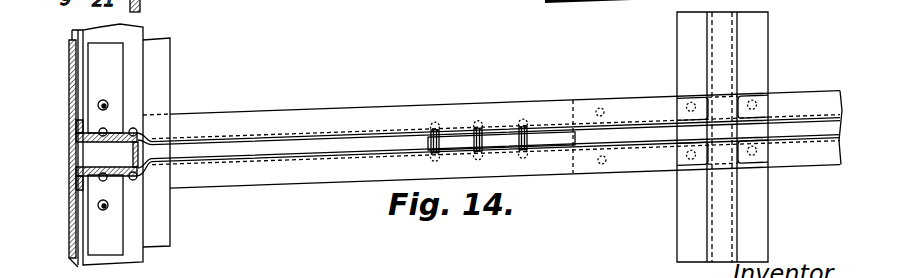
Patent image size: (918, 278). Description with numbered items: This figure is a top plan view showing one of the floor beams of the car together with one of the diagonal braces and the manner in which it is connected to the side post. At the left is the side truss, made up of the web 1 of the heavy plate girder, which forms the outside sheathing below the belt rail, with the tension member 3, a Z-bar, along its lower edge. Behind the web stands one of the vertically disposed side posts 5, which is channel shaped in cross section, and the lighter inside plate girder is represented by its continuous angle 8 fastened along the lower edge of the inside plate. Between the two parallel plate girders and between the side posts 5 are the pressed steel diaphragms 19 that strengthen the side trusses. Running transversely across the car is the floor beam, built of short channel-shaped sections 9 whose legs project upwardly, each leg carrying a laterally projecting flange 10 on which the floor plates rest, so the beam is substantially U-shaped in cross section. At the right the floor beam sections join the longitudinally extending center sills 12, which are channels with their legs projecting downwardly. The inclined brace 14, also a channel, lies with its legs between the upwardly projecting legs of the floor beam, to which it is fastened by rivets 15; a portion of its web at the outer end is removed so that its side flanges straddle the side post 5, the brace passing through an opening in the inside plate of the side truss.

The web of the plate girder 1 is at (70, 152).
The tension member 3 is at (135, 37).
The side posts 5 is at (138, 172).
The continuous angle 8 is at (157, 88).
The channel-shaped sections 9 is at (338, 170).
The laterally projecting flange 10 is at (288, 128).
The center sills 12 is at (725, 197).
The inclined braces 14 is at (242, 169).
The rivets 15 is at (435, 138).
The pressed steel diaphragms 19 is at (105, 215).